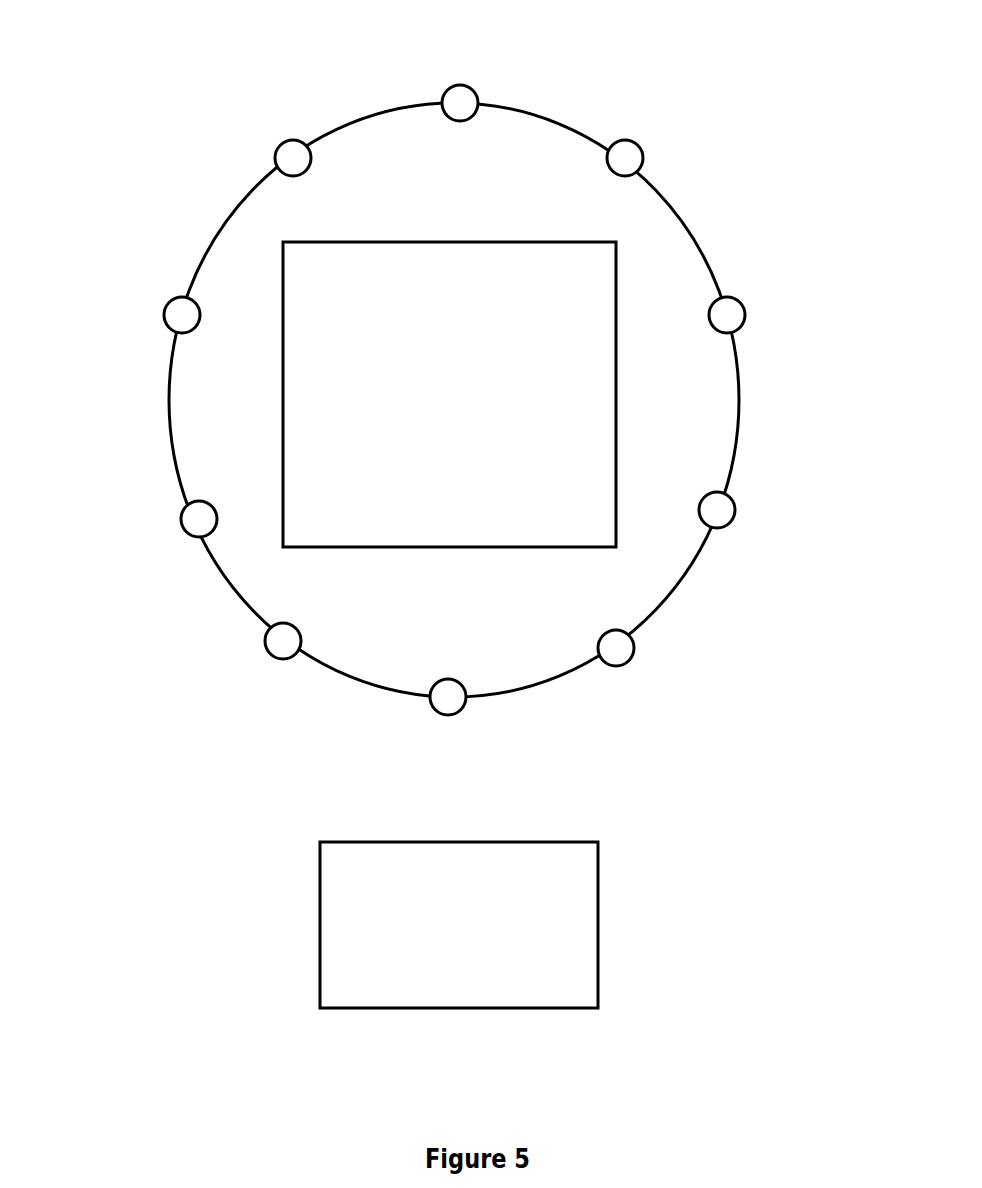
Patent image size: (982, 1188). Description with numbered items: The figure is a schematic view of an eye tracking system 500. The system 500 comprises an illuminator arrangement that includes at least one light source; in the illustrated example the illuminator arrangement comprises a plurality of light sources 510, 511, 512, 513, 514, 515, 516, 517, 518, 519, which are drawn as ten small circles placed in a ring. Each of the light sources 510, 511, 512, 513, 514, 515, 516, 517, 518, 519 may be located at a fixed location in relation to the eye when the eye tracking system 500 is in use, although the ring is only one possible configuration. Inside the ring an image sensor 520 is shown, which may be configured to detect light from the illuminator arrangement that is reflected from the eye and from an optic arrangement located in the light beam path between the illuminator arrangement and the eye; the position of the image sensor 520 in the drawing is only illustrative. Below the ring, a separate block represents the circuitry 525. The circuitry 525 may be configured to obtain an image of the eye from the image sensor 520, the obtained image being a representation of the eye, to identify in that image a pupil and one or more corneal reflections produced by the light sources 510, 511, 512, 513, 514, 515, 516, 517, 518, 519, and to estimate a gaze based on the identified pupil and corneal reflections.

The eye tracking system 500 is at (210, 795).
The light source 510 is at (278, 142).
The light source 511 is at (464, 86).
The light source 512 is at (636, 142).
The light source 513 is at (736, 298).
The light source 514 is at (733, 517).
The light source 515 is at (633, 658).
The light source 516 is at (452, 717).
The light source 517 is at (262, 648).
The light source 518 is at (178, 521).
The light source 519 is at (176, 300).
The image sensor 520 is at (423, 240).
The circuitry 525 is at (320, 910).